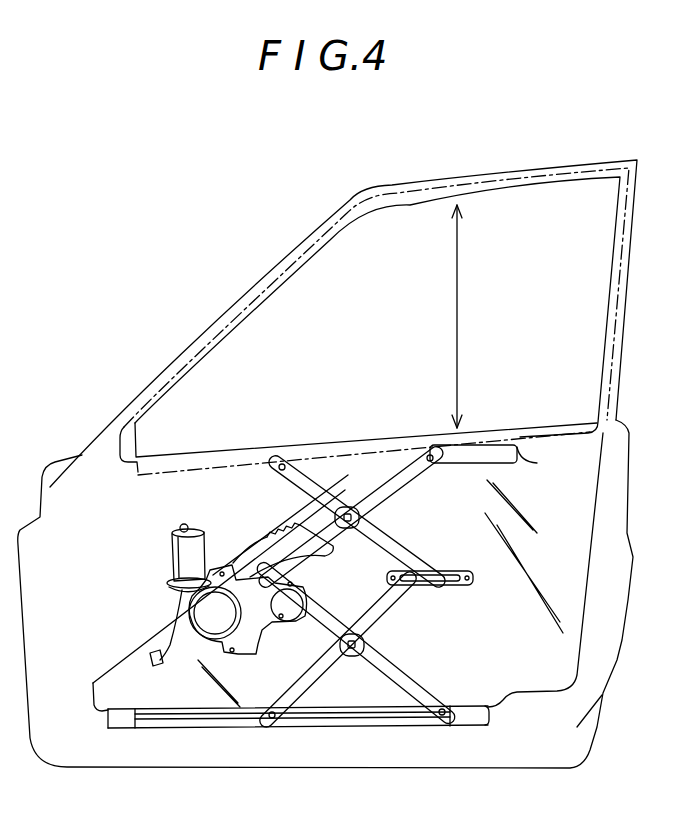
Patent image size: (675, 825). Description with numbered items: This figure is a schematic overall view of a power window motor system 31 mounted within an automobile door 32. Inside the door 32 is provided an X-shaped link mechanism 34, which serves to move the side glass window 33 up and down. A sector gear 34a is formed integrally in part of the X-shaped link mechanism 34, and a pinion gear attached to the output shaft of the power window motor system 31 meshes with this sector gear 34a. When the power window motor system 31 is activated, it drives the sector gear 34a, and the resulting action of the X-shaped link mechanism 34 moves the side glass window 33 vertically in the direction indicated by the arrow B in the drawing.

The power window motor system 31 is at (166, 565).
The automobile door 32 is at (96, 440).
The side glass window 33 is at (134, 643).
The X-shaped link mechanism 34 is at (395, 645).
The sector gear 34a is at (280, 530).
The arrow B is at (458, 308).